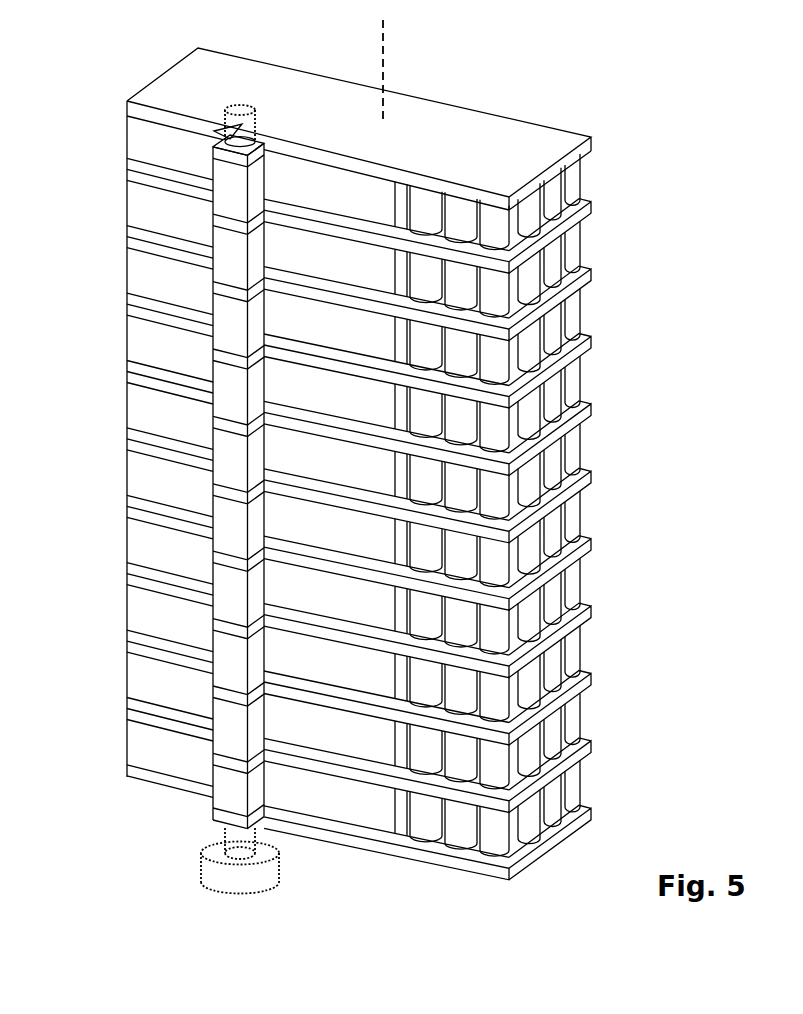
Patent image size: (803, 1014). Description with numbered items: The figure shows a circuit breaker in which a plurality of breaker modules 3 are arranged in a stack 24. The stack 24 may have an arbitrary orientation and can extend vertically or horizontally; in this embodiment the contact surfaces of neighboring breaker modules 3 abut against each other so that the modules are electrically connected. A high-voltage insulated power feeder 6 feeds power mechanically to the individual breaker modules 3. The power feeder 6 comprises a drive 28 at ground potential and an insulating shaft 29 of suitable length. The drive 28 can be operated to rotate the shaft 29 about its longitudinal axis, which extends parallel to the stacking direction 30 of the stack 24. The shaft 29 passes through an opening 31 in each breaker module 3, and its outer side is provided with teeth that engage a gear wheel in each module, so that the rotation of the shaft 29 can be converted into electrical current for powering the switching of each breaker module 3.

The breaker module 3 is at (318, 505).
The power feeder 6 is at (170, 824).
The stack 24 is at (618, 104).
The drive 28 is at (262, 893).
The insulating shaft 29 is at (257, 117).
The stacking direction 30 is at (383, 62).
The opening 31 is at (224, 133).